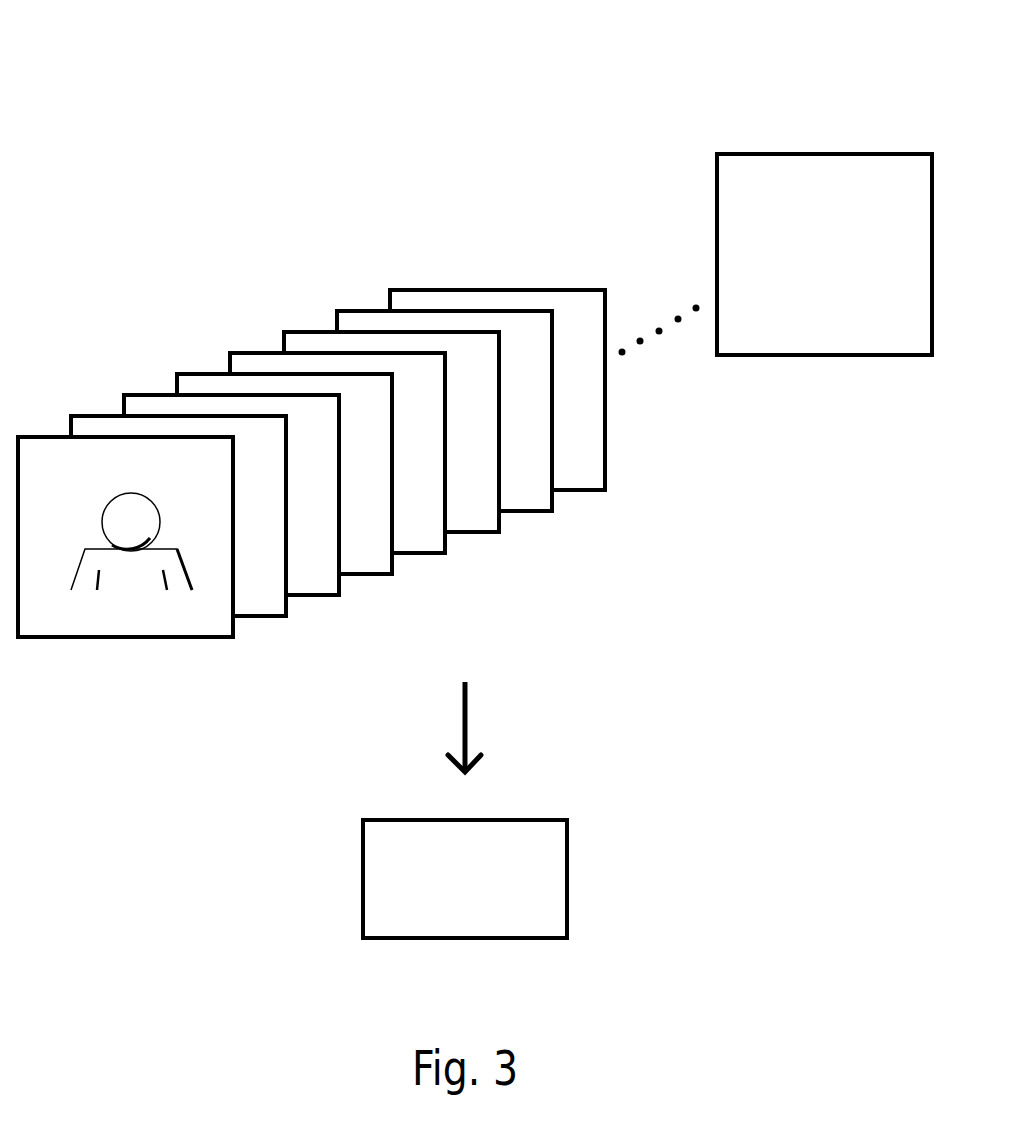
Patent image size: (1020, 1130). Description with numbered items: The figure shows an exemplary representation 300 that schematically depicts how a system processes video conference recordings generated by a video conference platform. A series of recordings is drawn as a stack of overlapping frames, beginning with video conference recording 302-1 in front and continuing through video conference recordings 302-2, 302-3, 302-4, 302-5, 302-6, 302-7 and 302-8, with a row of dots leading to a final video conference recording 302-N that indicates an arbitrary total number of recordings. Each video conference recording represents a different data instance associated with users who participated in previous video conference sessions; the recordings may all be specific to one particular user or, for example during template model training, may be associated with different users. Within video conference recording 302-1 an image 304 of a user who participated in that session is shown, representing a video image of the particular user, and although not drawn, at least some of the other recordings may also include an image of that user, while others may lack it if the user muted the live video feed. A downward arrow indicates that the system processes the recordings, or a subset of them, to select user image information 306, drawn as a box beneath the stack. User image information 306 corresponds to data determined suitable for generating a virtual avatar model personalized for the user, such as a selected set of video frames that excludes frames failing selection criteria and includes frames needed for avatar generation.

The exemplary representation 300 is at (155, 80).
The video conference recording 302-1 is at (215, 637).
The video conference recording 302-2 is at (268, 616).
The video conference recording 302-3 is at (321, 595).
The video conference recording 302-4 is at (374, 574).
The video conference recording 302-5 is at (427, 553).
The video conference recording 302-6 is at (481, 532).
The video conference recording 302-7 is at (534, 511).
The video conference recording 302-8 is at (587, 490).
The video conference recording 302-N is at (820, 355).
The image 304 is at (125, 493).
The user image information 306 is at (465, 879).